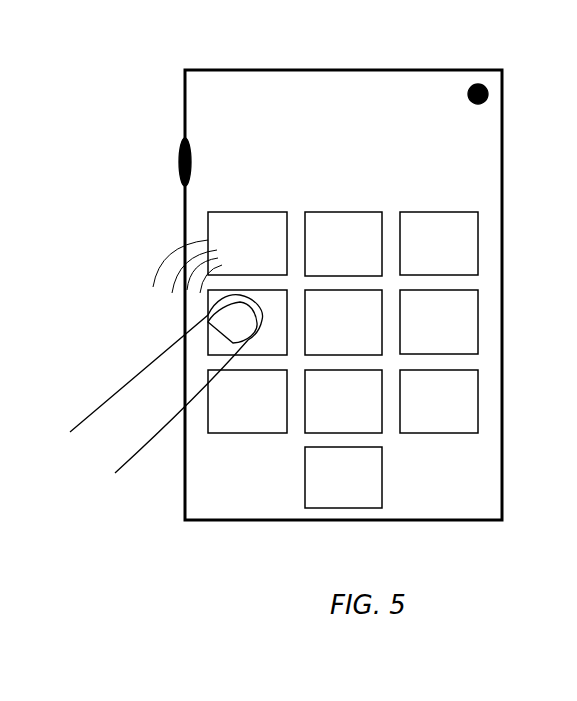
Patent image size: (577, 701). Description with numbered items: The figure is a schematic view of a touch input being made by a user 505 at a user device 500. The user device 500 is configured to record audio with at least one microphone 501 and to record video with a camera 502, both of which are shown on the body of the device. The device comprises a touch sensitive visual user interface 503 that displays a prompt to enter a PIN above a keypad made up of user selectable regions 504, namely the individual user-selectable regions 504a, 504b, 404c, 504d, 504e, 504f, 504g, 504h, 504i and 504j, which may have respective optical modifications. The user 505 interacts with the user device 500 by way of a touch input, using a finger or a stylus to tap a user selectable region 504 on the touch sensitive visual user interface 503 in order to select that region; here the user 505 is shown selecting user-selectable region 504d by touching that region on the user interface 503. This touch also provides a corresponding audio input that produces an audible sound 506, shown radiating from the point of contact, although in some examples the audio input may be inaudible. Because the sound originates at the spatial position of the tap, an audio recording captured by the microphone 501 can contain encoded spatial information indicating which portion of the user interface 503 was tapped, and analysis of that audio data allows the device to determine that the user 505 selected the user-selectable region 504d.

The user device 500 is at (186, 526).
The microphone 501 is at (179, 162).
The camera 502 is at (487, 93).
The touch sensitive visual user interface 503 is at (484, 467).
The user selectable region 504 is at (473, 308).
The user-selectable region 504a is at (217, 227).
The user-selectable region 504b is at (335, 223).
The key 3 404c is at (463, 235).
The user-selectable region 504d is at (267, 340).
The user-selectable region 504e is at (335, 335).
The user-selectable region 504f is at (467, 335).
The user-selectable region 504g is at (223, 415).
The user-selectable region 504h is at (372, 412).
The user-selectable region 504i is at (462, 408).
The user-selectable region 504j is at (344, 500).
The user 505 is at (160, 354).
The audible sound 506 is at (165, 266).